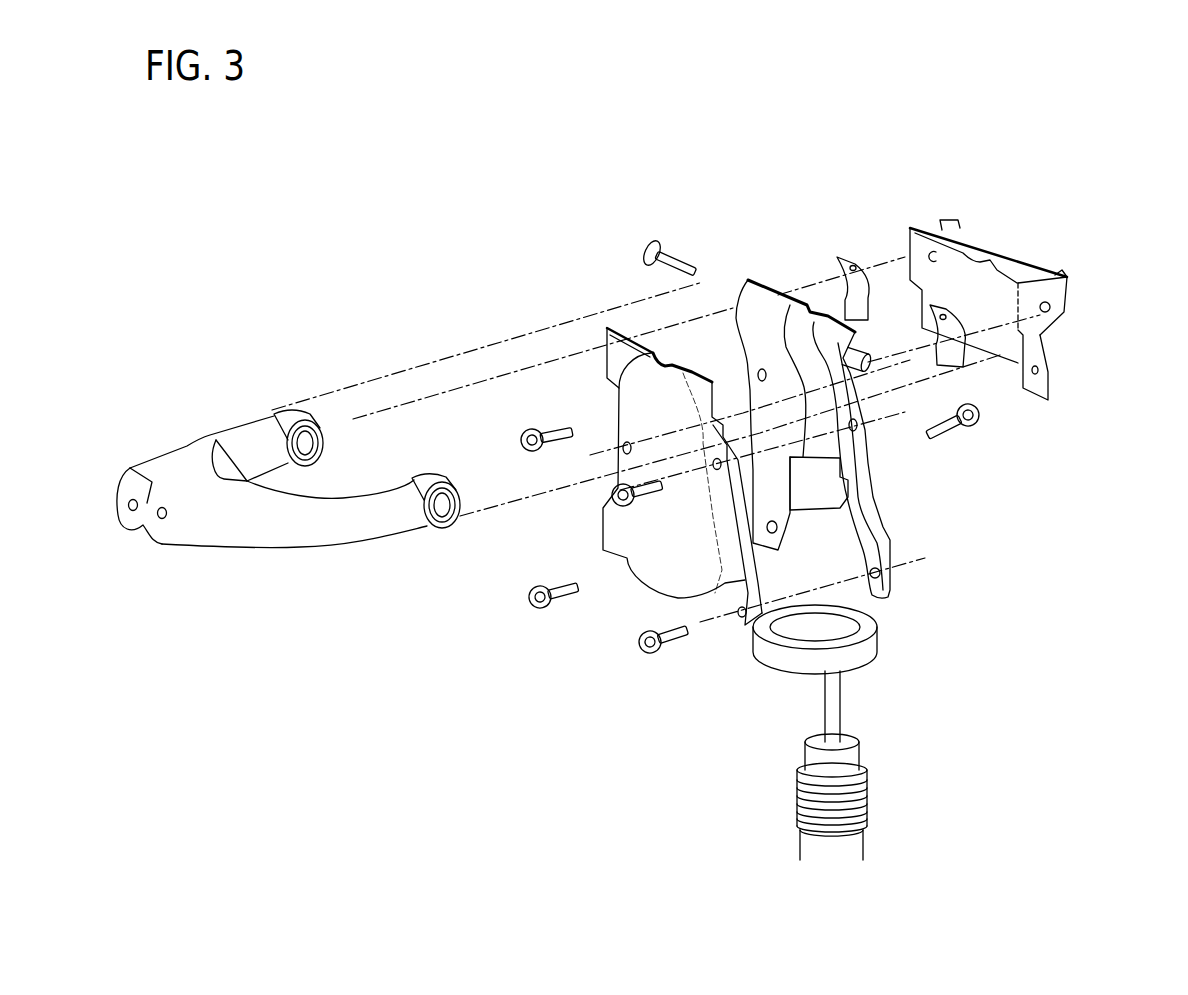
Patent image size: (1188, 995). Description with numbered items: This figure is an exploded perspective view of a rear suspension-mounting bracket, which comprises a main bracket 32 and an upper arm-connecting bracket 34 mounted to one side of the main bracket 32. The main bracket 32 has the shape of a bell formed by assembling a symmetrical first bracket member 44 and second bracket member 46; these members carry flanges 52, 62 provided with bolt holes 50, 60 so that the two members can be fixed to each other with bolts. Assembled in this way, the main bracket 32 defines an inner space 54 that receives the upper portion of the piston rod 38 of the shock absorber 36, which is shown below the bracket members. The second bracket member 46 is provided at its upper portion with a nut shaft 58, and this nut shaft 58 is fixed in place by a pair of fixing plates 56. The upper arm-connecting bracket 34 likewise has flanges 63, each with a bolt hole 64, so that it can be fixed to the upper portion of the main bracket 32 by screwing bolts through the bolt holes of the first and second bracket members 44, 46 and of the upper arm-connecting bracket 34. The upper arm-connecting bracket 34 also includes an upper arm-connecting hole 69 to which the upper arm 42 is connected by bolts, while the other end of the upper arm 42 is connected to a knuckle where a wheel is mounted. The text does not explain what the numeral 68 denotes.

The main bracket 32 is at (709, 266).
The upper arm-connecting bracket 34 is at (1026, 320).
The shock absorber 36 is at (852, 732).
The piston rod 38 is at (835, 712).
The upper arm 42 is at (176, 446).
The first bracket member 44 is at (664, 527).
The second bracket member 46 is at (896, 460).
The bolt hole 50 is at (740, 622).
The flange 52 is at (698, 623).
The inner space 54 is at (818, 500).
The fixing plate 56 is at (851, 257).
The nut shaft 58 is at (905, 382).
The bolt hole 60 is at (763, 369).
The flange 62 is at (855, 473).
The flange 63 is at (1057, 382).
The bolt hole 64 is at (1032, 380).
The hole 68 is at (1040, 295).
The upper arm-connecting hole 69 is at (1052, 310).